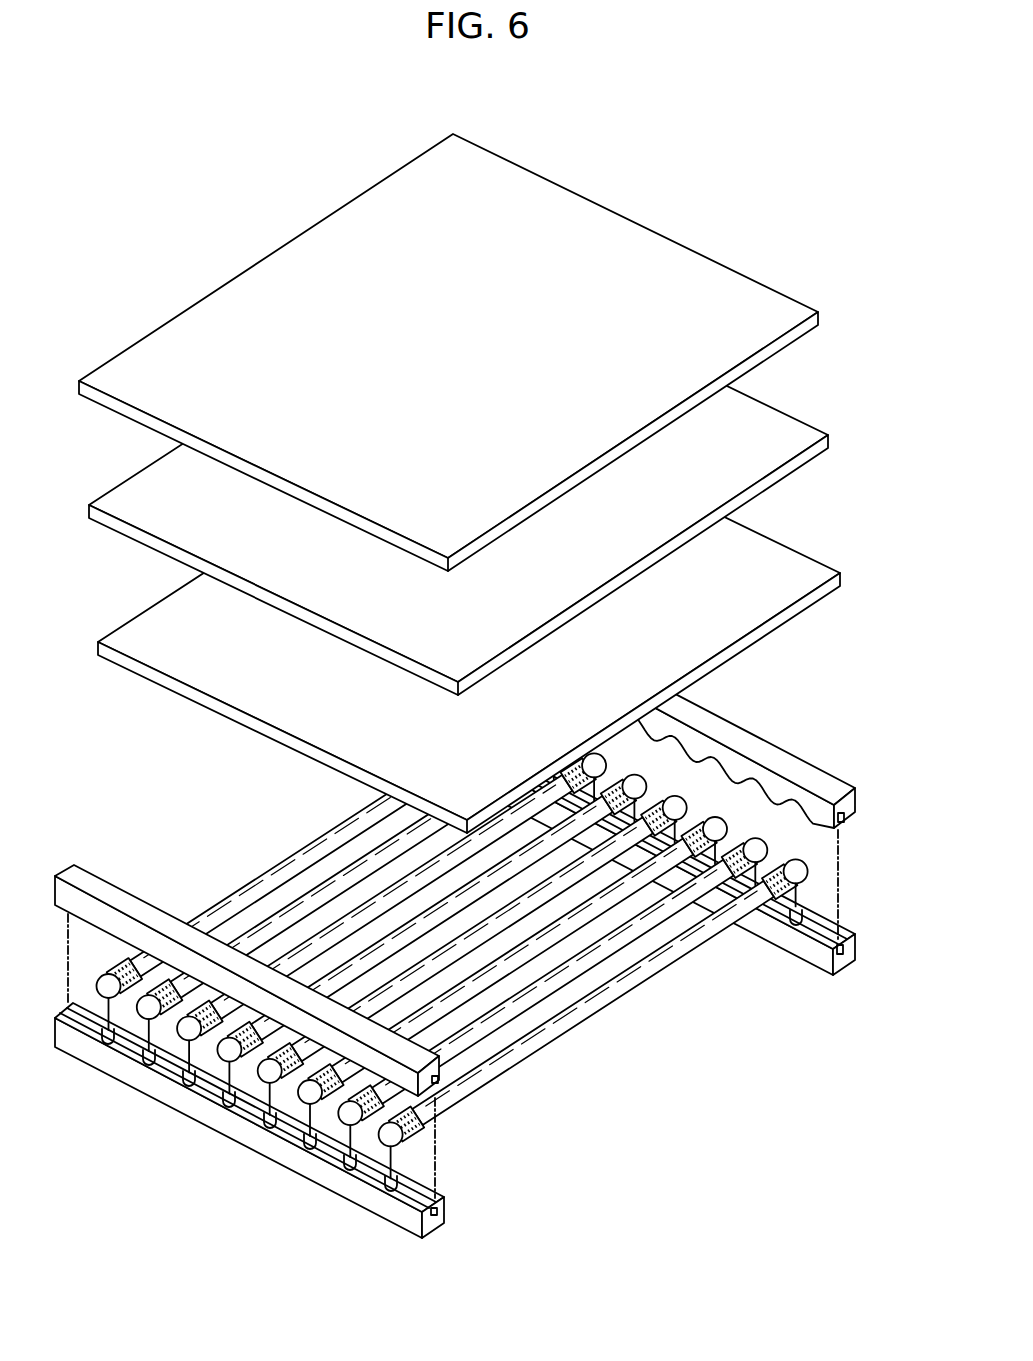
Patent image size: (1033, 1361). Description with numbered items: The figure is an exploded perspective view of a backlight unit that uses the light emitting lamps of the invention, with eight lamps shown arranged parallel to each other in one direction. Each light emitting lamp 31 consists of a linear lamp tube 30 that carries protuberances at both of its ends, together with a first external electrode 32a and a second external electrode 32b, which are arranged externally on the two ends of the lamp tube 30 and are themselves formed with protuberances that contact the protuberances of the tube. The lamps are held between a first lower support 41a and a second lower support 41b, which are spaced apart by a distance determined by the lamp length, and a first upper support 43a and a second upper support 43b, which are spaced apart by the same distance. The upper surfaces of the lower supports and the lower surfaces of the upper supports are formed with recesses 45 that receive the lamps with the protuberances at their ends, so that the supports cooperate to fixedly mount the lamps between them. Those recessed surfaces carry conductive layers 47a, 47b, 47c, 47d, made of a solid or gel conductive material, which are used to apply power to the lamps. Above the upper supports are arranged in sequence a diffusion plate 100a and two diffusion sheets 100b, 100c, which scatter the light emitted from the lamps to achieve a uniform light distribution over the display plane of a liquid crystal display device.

The lamp tube 30 is at (335, 833).
The light emitting lamp 31 is at (462, 973).
The first external electrode 32a is at (383, 1153).
The second external electrode 32b is at (725, 812).
The first lower support 41a is at (236, 1129).
The second lower support 41b is at (818, 961).
The first upper support 43a is at (129, 894).
The second upper support 43b is at (820, 782).
The recess 45 is at (793, 812).
The conductive layer 47a is at (442, 1213).
The conductive layer 47b is at (848, 951).
The conductive layer 47c is at (442, 1078).
The conductive layer 47d is at (840, 826).
The diffusion plate 100a is at (812, 600).
The diffusion sheet 100b is at (810, 458).
The diffusion sheet 100c is at (812, 330).